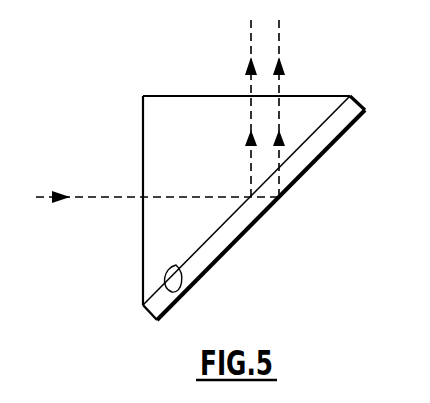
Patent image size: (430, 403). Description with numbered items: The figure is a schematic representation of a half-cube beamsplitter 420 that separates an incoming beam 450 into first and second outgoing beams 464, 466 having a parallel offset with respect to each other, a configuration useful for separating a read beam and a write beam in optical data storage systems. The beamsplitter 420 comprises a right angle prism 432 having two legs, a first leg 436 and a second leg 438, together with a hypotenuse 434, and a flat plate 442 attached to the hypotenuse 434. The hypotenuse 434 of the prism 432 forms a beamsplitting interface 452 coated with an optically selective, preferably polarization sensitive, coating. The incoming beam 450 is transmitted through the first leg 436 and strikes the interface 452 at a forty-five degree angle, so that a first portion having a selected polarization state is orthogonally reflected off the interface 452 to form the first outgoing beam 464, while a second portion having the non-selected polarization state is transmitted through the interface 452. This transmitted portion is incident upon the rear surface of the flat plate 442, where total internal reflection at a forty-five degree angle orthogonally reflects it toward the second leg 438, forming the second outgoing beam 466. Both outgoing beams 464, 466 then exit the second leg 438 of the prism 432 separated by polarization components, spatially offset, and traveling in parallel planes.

The half-cube beamsplitter 420 is at (241, 180).
The right angle prism 432 is at (128, 129).
The hypotenuse 434 is at (178, 298).
The first leg 436 is at (141, 282).
The second leg 438 is at (308, 96).
The flat plate 442 is at (325, 138).
The incoming beam 450 is at (75, 200).
The beamsplitting interface 452 is at (342, 117).
The first outgoing beam 464 is at (250, 33).
The second outgoing beam 466 is at (280, 32).